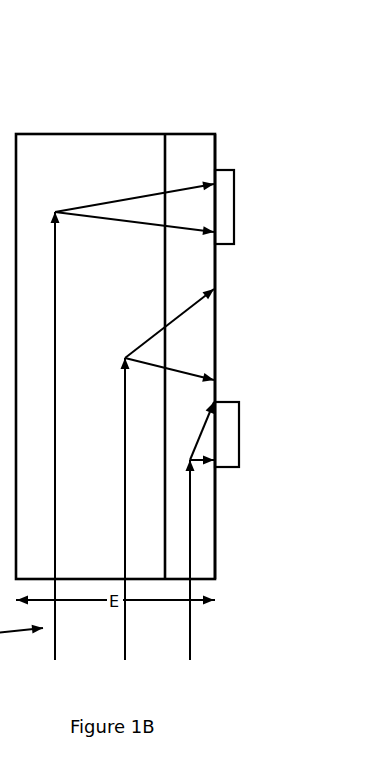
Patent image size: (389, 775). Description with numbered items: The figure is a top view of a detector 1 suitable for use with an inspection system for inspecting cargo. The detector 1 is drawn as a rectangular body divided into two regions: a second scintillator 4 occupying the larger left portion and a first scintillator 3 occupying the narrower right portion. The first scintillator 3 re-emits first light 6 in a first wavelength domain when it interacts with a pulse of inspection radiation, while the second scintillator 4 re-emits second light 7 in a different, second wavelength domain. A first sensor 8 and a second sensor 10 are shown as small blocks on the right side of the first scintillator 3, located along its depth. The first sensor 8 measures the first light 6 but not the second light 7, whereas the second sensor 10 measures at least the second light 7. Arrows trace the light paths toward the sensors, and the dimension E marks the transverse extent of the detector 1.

The detector 1 is at (82, 122).
The first scintillator 3 is at (193, 356).
The second scintillator 4 is at (99, 356).
The first light 6 is at (197, 478).
The second light 7 is at (206, 166).
The first sensor 8 is at (222, 458).
The second sensor 10 is at (228, 232).